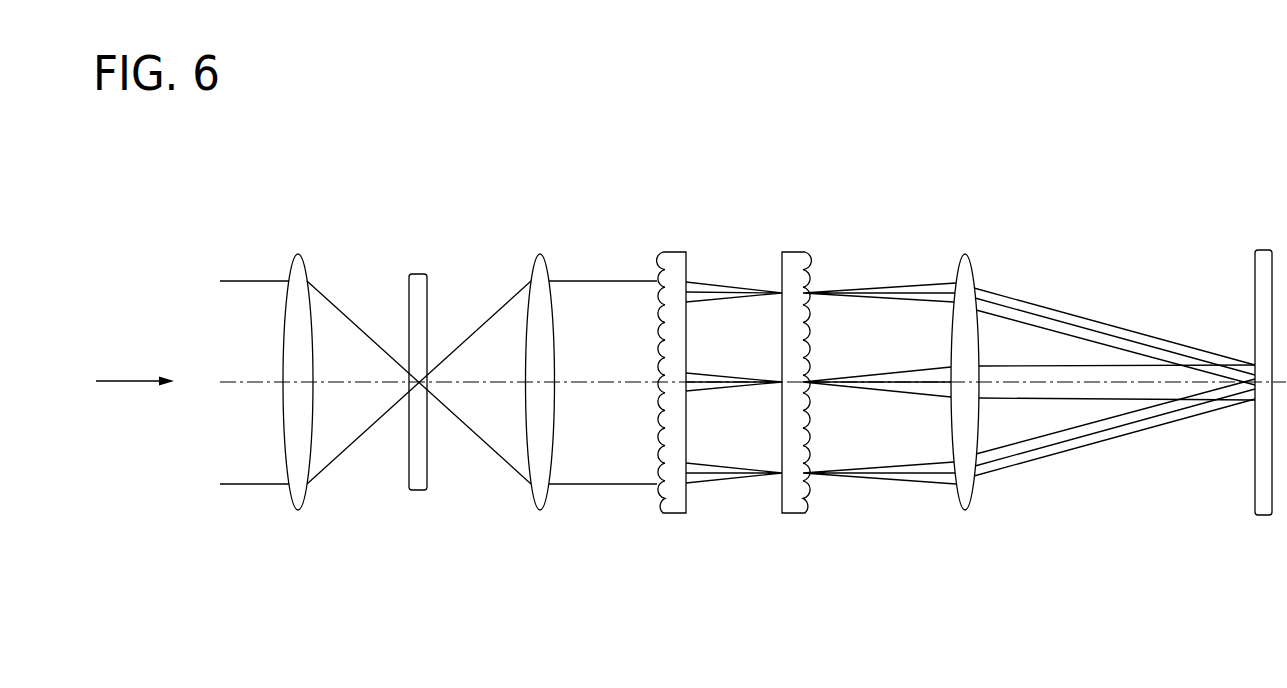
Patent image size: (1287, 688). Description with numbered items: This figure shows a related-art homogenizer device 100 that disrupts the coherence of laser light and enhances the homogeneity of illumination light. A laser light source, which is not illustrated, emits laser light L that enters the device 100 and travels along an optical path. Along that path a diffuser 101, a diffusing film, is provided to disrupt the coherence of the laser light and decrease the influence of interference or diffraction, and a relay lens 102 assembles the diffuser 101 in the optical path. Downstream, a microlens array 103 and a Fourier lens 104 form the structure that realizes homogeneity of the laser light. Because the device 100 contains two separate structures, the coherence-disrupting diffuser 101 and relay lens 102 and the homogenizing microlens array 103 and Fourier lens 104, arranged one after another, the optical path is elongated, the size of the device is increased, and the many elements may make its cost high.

The device 100 is at (1187, 123).
The diffuser 101 is at (415, 492).
The relay lens 102 is at (296, 512).
The microlens array 103 is at (670, 515).
The Fourier lens 104 is at (965, 512).
The laser light L is at (135, 378).